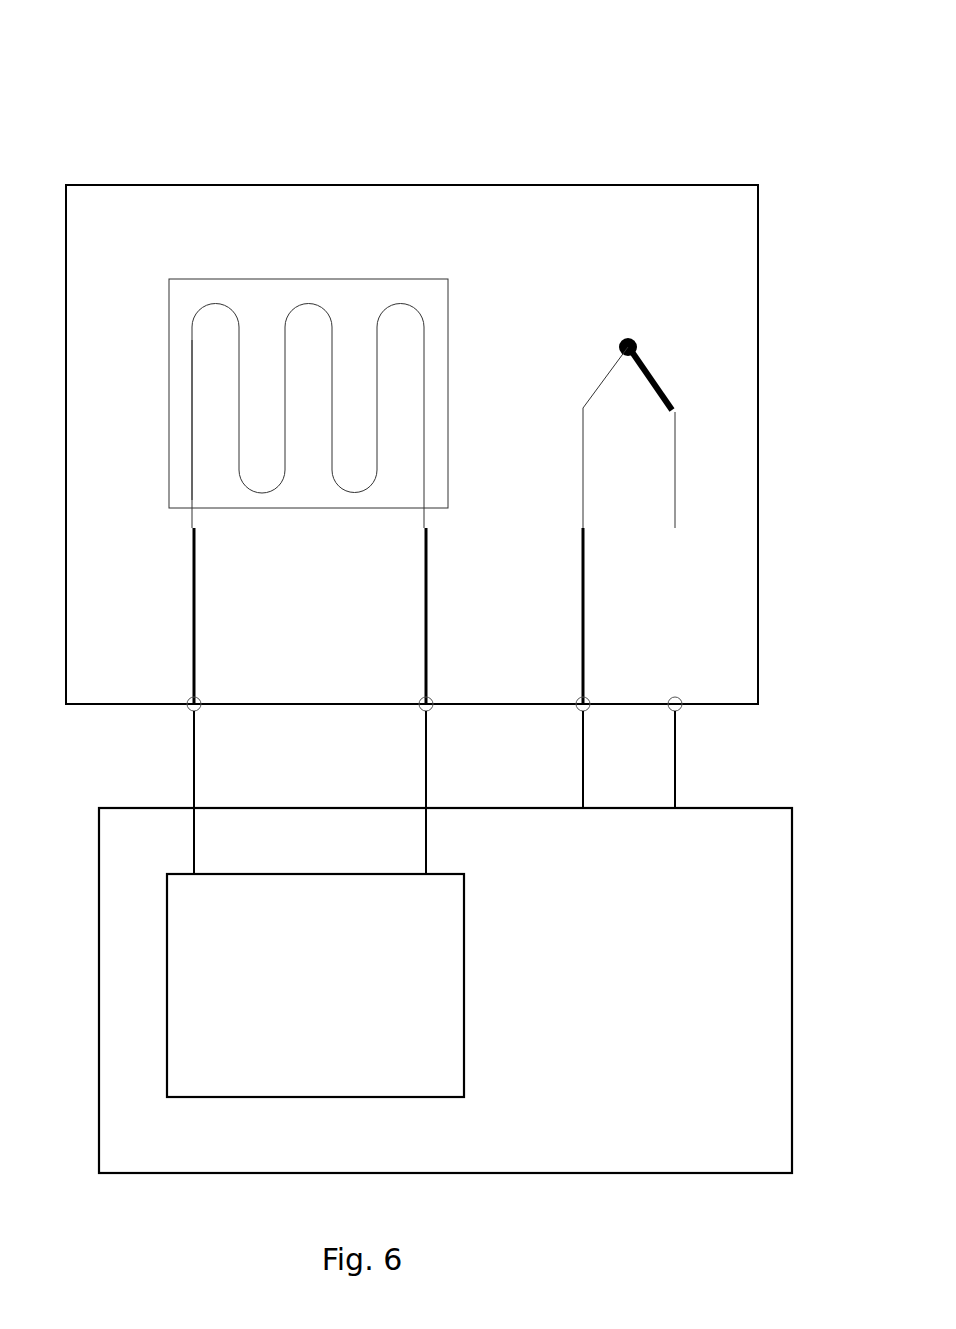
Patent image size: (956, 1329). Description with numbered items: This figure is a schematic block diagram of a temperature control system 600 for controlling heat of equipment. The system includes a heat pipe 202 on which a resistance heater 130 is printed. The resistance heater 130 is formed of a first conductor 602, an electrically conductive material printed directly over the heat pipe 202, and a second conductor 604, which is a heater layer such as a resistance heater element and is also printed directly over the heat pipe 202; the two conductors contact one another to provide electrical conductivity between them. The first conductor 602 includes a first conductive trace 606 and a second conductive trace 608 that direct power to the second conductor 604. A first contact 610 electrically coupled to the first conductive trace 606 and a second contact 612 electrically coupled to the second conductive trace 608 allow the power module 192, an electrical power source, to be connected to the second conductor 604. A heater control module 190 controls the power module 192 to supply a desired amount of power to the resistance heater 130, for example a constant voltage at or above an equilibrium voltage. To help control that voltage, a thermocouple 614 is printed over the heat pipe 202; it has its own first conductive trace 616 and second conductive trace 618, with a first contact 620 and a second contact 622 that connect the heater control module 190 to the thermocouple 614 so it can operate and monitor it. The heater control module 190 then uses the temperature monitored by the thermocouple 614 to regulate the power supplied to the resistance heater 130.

The temperature control system 600 is at (498, 86).
The heat pipe 202 is at (395, 243).
The resistance heater 130 is at (329, 403).
The first conductor 602 is at (559, 462).
The second conductor 604 is at (193, 425).
The first conductive trace 606 is at (194, 619).
The second conductive trace 608 is at (426, 620).
The first contact 610 is at (188, 701).
The second contact 612 is at (420, 701).
The thermocouple 614 is at (583, 435).
The first conductive trace 616 is at (583, 608).
The second conductive trace 618 is at (675, 553).
The first contact 620 is at (577, 703).
The second contact 622 is at (669, 703).
The heater control module 190 is at (749, 866).
The power module 192 is at (299, 931).